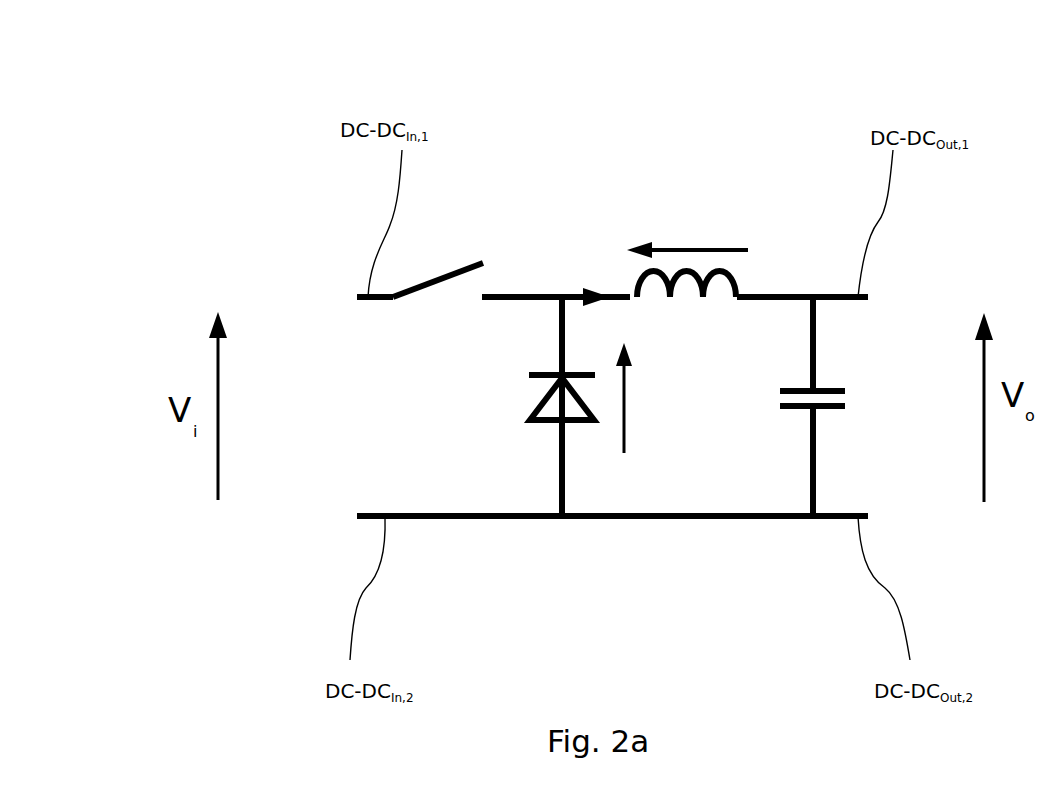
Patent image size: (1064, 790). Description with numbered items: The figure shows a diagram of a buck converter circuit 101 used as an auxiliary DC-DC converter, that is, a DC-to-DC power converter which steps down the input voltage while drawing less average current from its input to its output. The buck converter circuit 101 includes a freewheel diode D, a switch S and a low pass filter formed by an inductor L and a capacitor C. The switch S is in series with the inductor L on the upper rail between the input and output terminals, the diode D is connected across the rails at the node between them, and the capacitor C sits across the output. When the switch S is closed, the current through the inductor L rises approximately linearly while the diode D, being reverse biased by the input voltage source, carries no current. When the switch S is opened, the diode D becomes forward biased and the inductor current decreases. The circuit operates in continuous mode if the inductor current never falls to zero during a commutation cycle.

The buck converter circuit 101 is at (755, 175).
The switch S is at (438, 305).
The inductor L is at (686, 314).
The freewheel diode D is at (541, 406).
The capacitor C is at (791, 406).